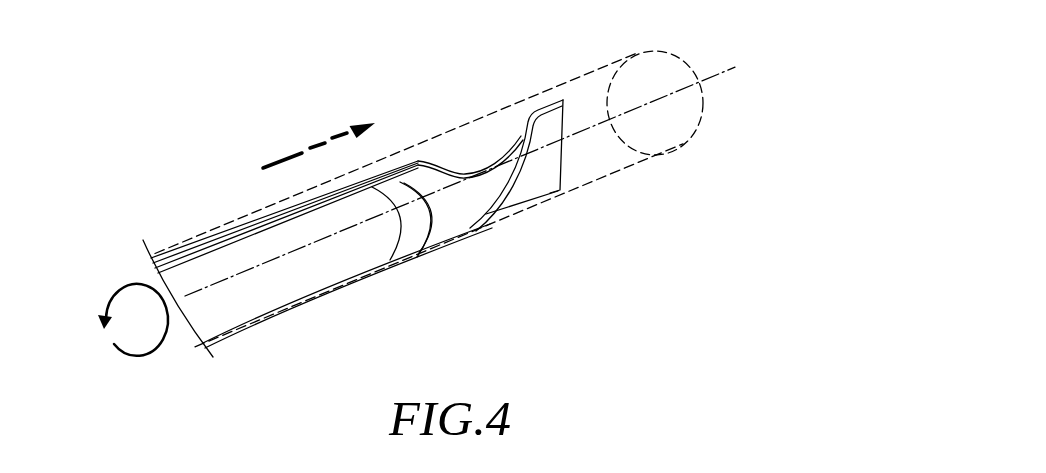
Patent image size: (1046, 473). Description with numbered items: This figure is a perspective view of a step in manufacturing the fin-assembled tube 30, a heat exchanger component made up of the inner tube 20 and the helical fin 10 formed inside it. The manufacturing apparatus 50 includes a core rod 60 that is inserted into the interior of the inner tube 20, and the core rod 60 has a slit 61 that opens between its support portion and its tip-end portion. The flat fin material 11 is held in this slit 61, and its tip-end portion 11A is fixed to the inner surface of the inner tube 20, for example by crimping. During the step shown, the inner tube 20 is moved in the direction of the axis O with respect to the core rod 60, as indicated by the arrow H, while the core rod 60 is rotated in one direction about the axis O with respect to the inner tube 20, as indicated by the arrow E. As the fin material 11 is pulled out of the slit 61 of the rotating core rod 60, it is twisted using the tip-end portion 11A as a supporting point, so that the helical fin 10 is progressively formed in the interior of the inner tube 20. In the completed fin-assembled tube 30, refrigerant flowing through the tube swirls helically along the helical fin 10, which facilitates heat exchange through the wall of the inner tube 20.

The helical fin 10 is at (489, 218).
The fin material 11 is at (418, 250).
The tip-end portion 11A is at (551, 190).
The inner tube 20 is at (624, 176).
The fin-assembled tube 30 is at (667, 155).
The manufacturing apparatus 50 is at (231, 137).
The core rod 60 is at (330, 283).
The slit 61 is at (332, 198).
The axis O is at (708, 78).
The arrow H is at (320, 145).
The arrow E is at (126, 283).